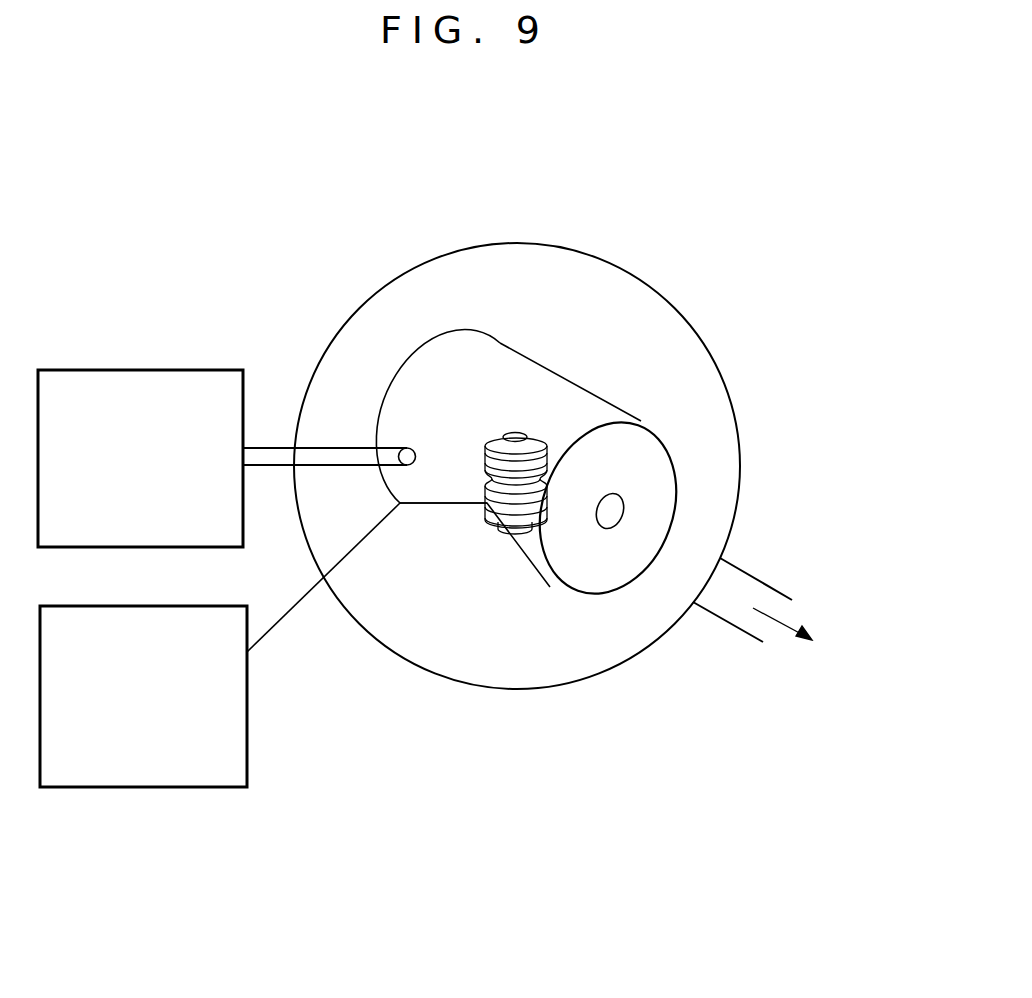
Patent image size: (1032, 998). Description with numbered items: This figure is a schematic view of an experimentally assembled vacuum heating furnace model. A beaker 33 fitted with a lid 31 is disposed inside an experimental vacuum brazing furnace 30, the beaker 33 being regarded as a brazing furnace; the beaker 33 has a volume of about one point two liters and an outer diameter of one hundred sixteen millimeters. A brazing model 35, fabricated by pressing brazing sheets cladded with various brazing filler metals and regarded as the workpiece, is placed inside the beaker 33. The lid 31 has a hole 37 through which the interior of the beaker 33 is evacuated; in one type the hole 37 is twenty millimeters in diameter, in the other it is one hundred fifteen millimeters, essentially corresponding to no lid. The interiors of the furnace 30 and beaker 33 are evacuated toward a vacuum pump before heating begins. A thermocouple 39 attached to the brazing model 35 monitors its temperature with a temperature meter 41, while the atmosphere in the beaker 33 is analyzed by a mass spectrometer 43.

The experimental vacuum brazing furnace 30 is at (690, 326).
The lid 31 is at (655, 460).
The beaker 33 is at (490, 370).
The brazing model 35 is at (517, 432).
The hole 37 is at (625, 512).
The thermocouple 39 is at (457, 503).
The temperature meter 41 is at (208, 788).
The mass spectrometer 43 is at (212, 370).